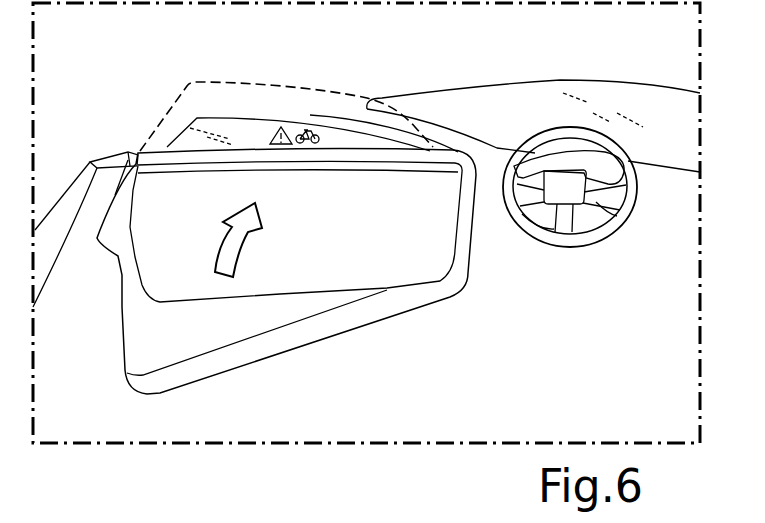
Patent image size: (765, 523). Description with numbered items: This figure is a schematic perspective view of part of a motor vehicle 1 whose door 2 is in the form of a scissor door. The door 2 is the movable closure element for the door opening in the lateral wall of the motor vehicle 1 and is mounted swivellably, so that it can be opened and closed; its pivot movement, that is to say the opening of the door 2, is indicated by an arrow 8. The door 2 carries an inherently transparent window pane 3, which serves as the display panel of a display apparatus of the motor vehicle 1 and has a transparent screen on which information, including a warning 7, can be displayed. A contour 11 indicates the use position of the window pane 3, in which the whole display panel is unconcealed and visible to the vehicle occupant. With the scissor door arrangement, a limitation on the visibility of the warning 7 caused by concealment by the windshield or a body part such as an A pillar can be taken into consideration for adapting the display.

The motor vehicle 1 is at (670, 247).
The door 2 is at (335, 268).
The window pane 3 is at (238, 128).
The warning 7 is at (273, 131).
The arrow 8 is at (233, 247).
The contour 11 is at (180, 97).